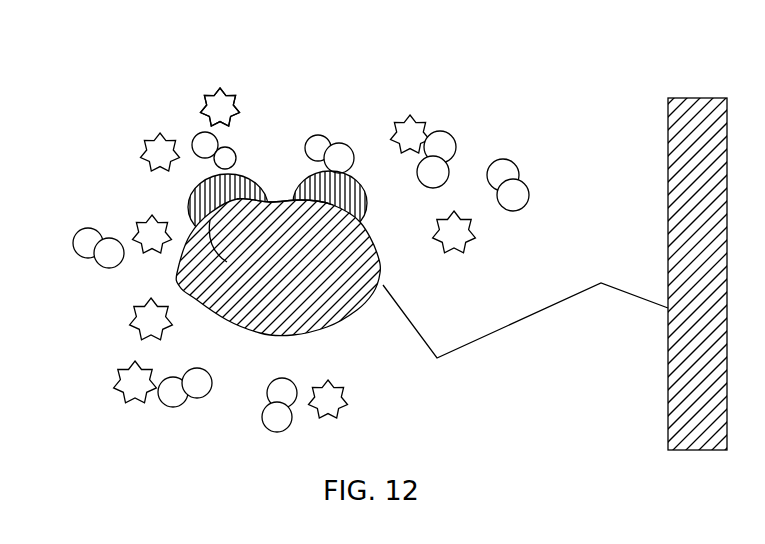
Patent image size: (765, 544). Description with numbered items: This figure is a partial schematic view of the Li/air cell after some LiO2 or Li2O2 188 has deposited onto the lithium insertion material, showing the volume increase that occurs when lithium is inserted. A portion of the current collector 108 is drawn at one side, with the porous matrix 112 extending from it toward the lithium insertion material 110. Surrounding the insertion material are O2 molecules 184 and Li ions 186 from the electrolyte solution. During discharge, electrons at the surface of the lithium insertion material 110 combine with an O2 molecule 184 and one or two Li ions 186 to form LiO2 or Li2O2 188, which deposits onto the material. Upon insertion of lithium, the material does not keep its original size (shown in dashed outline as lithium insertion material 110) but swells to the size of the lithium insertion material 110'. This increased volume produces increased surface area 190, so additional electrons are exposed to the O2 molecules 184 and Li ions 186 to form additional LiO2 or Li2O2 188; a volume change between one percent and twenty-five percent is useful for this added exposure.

The current collector 108 is at (668, 117).
The lithium insertion material 110 is at (129, 274).
The swollen lithium insertion material 110' is at (278, 301).
The porous matrix 112 is at (523, 318).
The O2 molecules 184 is at (489, 160).
The Li ions 186 is at (202, 112).
The LiO2 or Li2O2 188 is at (292, 203).
The increased surface area 190 is at (278, 205).